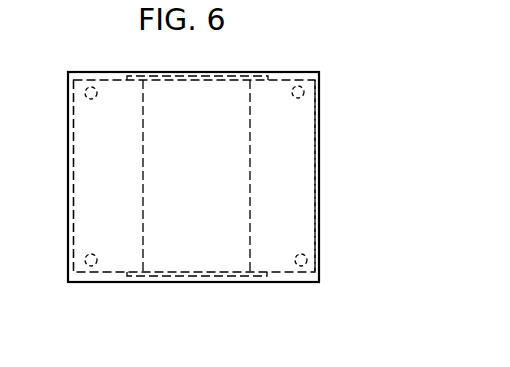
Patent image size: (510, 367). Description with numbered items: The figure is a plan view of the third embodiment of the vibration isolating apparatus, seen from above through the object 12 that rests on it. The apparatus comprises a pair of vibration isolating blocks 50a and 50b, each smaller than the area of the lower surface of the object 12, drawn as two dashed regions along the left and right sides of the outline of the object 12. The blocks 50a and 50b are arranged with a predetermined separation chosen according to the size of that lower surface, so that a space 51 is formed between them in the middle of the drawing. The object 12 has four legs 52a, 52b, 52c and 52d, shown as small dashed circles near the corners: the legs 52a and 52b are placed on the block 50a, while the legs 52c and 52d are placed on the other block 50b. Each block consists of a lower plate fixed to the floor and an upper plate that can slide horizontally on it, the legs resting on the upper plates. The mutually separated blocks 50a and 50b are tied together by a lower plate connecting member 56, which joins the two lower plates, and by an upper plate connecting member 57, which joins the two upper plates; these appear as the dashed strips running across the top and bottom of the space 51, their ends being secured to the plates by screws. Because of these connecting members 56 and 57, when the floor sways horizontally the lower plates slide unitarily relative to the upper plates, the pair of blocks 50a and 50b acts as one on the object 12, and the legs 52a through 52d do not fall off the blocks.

The object 12 is at (319, 168).
The vibration isolating block 50a is at (280, 265).
The vibration isolating block 50b is at (112, 263).
The space 51 is at (180, 258).
The leg 52a is at (297, 255).
The leg 52b is at (296, 98).
The leg 52c is at (95, 254).
The leg 52d is at (96, 98).
The lower plate connecting member 56 is at (213, 277).
The upper plate connecting member 57 is at (214, 73).